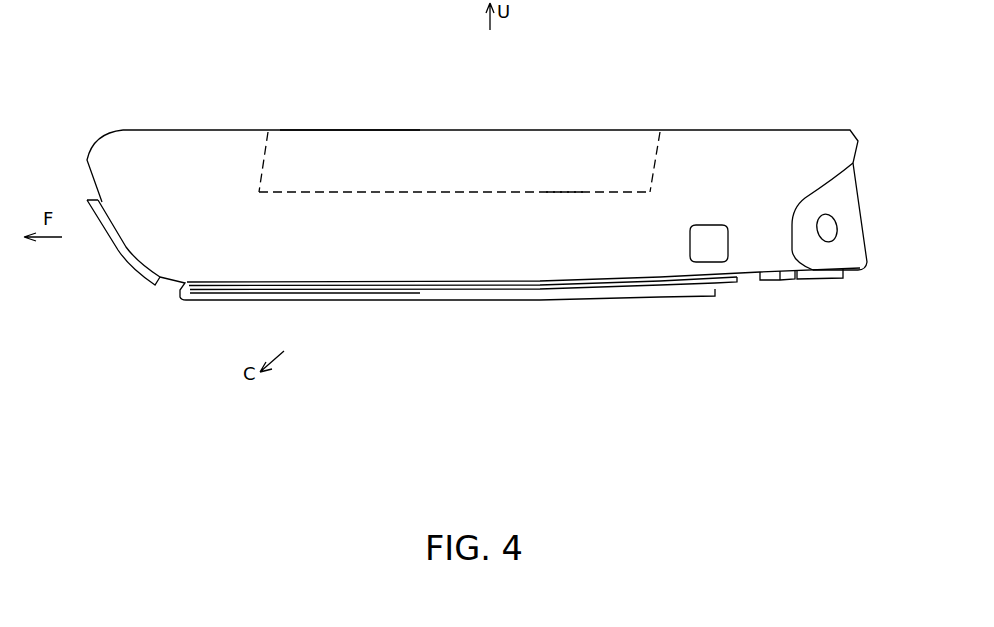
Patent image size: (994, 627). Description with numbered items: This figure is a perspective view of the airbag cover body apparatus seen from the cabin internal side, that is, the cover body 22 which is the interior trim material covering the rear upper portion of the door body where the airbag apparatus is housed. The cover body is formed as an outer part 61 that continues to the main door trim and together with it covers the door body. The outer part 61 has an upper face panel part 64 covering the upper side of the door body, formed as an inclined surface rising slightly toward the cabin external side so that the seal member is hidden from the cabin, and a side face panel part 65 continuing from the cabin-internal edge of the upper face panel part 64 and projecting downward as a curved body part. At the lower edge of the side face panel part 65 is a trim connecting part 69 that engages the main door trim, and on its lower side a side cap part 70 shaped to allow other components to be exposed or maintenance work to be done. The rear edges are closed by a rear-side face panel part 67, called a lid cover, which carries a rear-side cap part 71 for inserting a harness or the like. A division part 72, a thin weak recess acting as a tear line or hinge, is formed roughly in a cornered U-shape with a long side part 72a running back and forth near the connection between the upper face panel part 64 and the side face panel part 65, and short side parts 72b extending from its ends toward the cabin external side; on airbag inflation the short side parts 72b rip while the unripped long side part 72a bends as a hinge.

The cover body 22 is at (213, 87).
The outer part 61 is at (368, 145).
The upper face panel part 64 is at (310, 145).
The side face panel part 65 is at (535, 262).
The rear-side face panel part 67 is at (856, 246).
The trim connecting part 69 is at (436, 292).
The side cap part 70 is at (715, 248).
The rear-side cap part 71 is at (833, 223).
The division part 72 is at (546, 192).
The long side part 72a is at (588, 192).
The short side part 72b is at (263, 152).